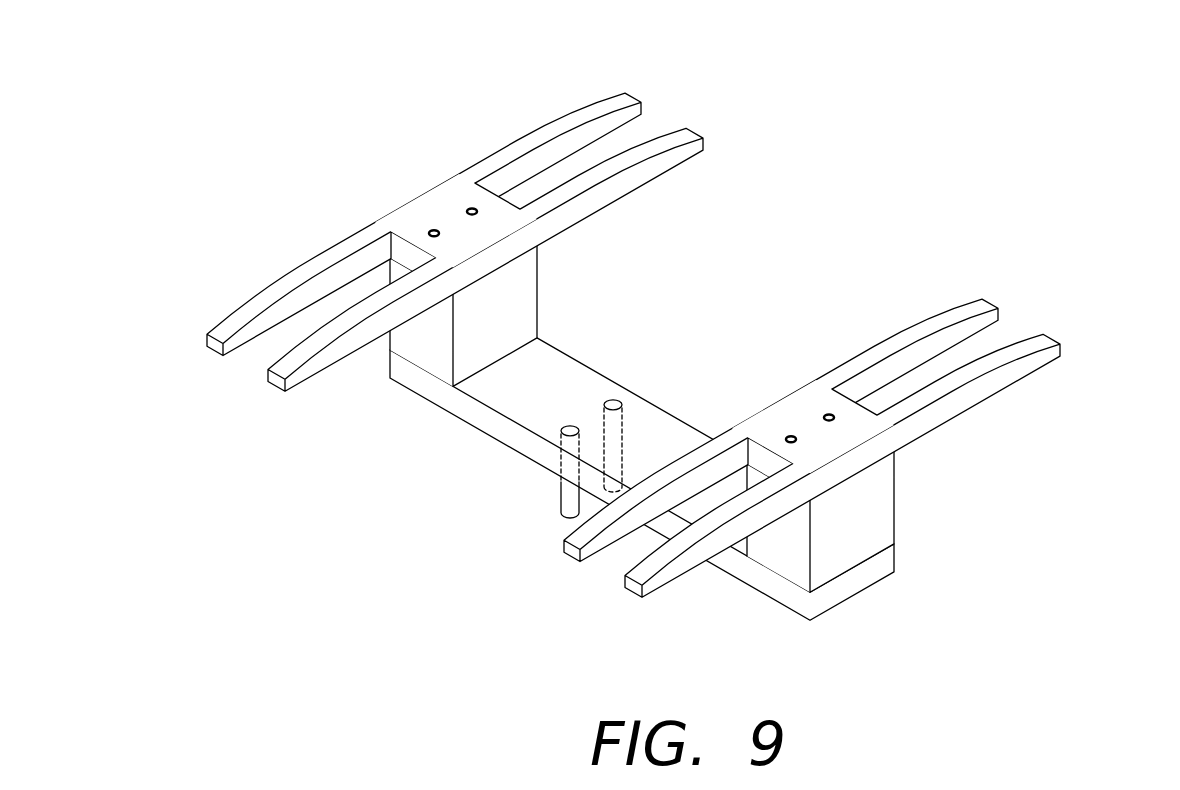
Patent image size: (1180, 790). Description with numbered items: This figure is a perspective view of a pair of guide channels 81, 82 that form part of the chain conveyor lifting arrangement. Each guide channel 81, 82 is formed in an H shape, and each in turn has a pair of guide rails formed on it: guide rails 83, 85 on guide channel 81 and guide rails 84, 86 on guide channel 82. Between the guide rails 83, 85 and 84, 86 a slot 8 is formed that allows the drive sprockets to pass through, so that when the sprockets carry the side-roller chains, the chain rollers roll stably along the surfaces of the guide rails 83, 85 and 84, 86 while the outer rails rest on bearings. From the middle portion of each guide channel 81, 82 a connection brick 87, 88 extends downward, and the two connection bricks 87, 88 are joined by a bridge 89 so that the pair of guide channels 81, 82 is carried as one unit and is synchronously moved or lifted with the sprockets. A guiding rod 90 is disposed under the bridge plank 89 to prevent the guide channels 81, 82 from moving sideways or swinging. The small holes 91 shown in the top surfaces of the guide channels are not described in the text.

The slot 8 is at (865, 451).
The guide channel 81 is at (865, 438).
The guide channel 82 is at (507, 206).
The guide rail 83 is at (668, 552).
The guide rail 84 is at (672, 132).
The guide rail 85 is at (598, 530).
The guide rail 86 is at (610, 100).
The connection brick 87 is at (525, 285).
The connection brick 88 is at (873, 498).
The bridge 89 is at (598, 392).
The guiding rod 90 is at (567, 500).
The positioning hole 91 is at (467, 208).